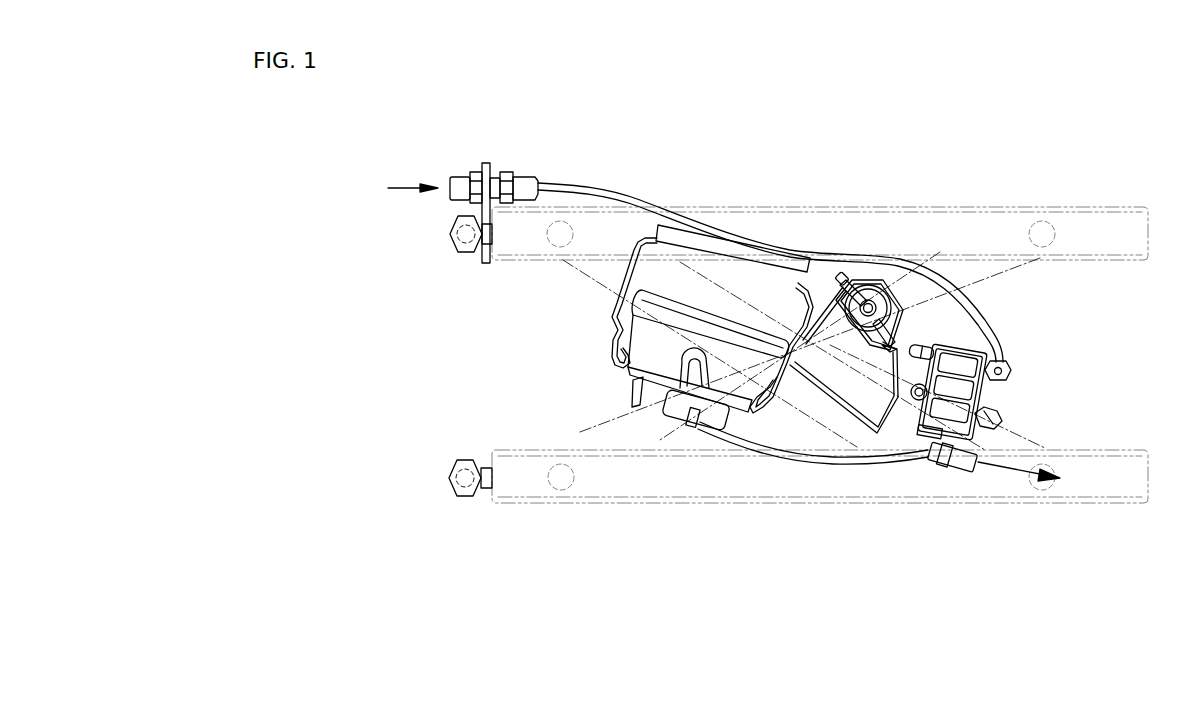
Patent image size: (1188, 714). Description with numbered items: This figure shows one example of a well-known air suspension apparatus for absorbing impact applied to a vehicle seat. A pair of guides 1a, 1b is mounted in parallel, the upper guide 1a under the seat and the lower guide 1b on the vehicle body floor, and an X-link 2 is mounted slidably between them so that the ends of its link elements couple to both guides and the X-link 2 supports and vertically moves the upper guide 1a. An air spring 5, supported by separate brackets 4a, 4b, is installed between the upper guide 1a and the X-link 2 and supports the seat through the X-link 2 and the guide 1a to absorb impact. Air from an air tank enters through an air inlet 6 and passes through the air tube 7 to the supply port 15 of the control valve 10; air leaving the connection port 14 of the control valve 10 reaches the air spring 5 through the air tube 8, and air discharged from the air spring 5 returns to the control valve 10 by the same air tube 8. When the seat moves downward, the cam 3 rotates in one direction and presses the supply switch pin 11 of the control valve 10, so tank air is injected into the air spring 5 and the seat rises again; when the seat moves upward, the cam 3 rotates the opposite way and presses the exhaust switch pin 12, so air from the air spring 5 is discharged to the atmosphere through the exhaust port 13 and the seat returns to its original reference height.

The upper guide 1a is at (958, 207).
The lower guide 1b is at (925, 505).
The X-link 2 is at (597, 282).
The cam 3 is at (897, 298).
The bracket 4a is at (793, 246).
The bracket 4b is at (633, 393).
The air spring 5 is at (617, 307).
The air inlet 6 is at (463, 173).
The air tube 7 is at (590, 185).
The air tube 8 is at (822, 464).
The control valve 10 is at (1000, 391).
The supply switch pin 11 is at (913, 340).
The exhaust switch pin 12 is at (895, 402).
The exhaust port 13 is at (953, 478).
The connection port 14 is at (1004, 416).
The supply port 15 is at (1010, 367).